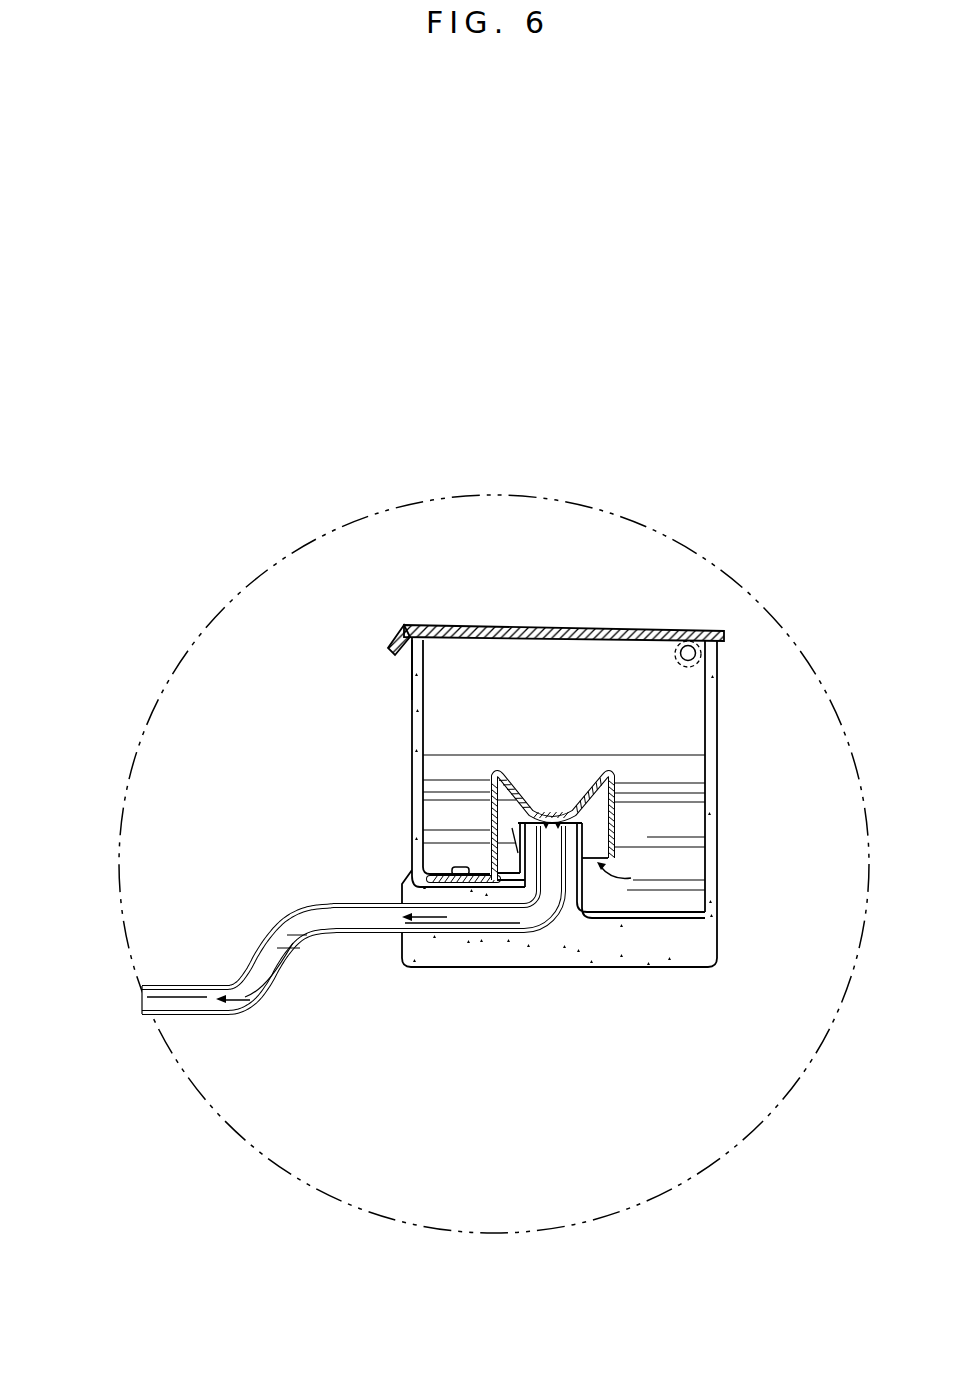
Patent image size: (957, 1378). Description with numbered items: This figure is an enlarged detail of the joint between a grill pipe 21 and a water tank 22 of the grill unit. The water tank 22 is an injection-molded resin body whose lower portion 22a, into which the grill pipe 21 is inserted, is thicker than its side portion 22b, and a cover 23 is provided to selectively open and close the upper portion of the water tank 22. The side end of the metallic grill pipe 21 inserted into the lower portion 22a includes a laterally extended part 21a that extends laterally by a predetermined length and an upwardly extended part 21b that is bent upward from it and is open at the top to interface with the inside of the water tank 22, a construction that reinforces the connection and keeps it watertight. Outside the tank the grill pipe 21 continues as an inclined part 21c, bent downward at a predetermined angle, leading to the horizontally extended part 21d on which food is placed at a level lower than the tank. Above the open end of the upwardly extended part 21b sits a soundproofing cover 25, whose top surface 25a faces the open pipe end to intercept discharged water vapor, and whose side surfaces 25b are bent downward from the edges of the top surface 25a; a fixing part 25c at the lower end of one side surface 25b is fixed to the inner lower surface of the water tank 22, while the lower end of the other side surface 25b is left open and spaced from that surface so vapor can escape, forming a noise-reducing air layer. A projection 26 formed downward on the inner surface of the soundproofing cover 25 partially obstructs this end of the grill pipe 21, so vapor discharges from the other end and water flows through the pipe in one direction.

The grill pipe 21 is at (186, 984).
The laterally extended part 21a is at (432, 902).
The upwardly extended part 21b is at (519, 893).
The inclined part 21c is at (268, 952).
The horizontally extended part 21d is at (153, 983).
The water tank 22 is at (718, 818).
The lower portion 22a is at (657, 955).
The side portion 22b is at (415, 713).
The cover 23 is at (552, 627).
The soundproofing cover 25 is at (588, 768).
The top surface 25a is at (507, 771).
The side surface 25b is at (490, 816).
The fixing part 25c is at (445, 874).
The projection 26 is at (614, 806).